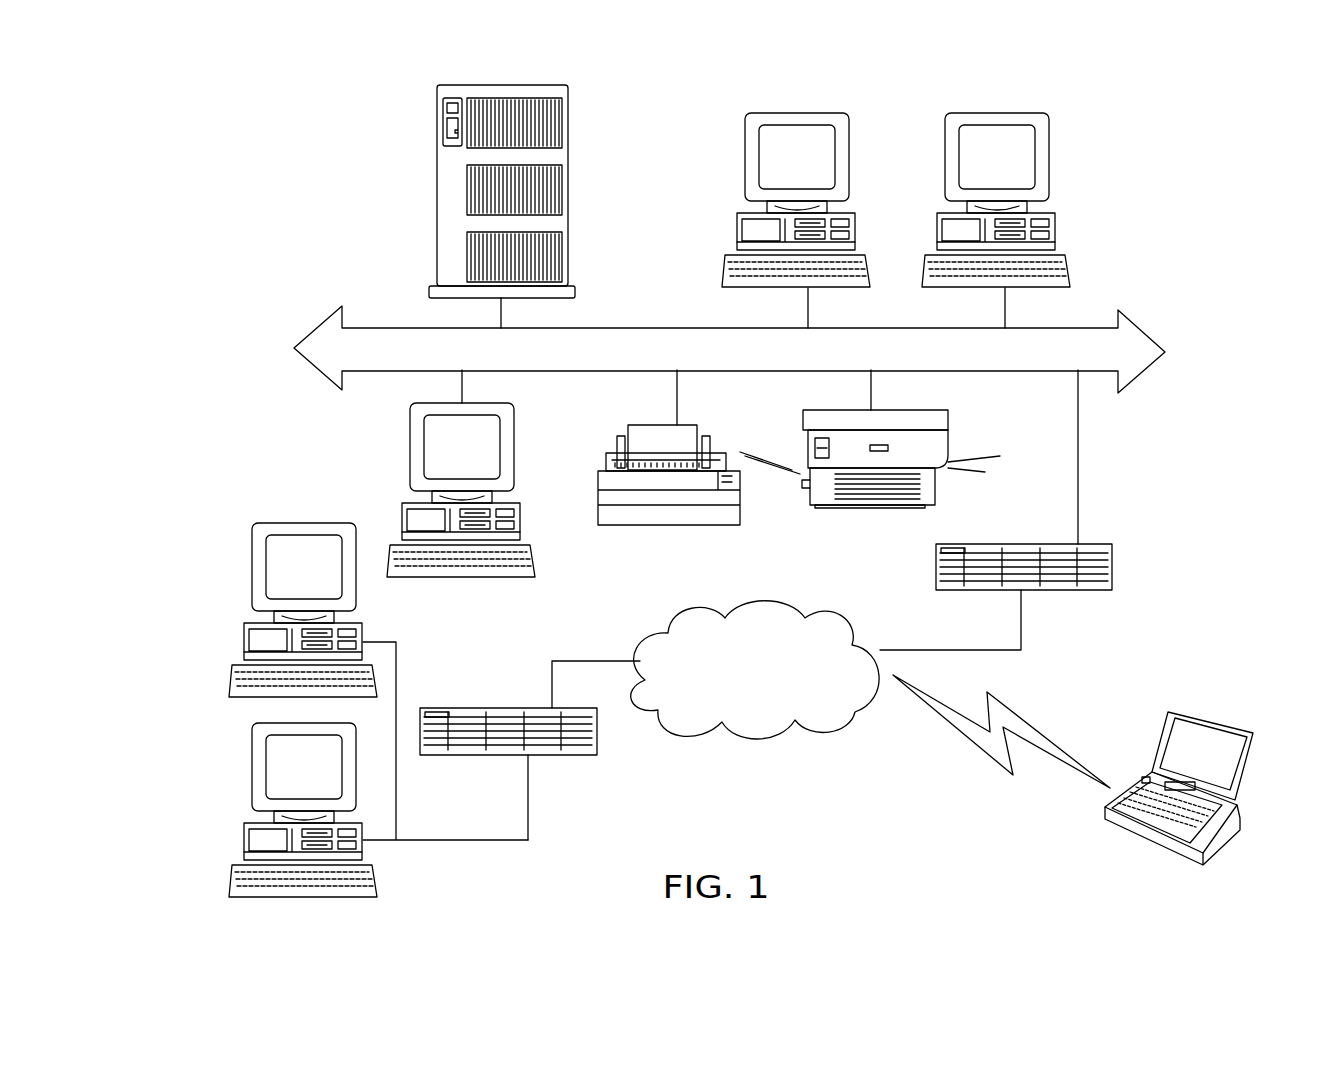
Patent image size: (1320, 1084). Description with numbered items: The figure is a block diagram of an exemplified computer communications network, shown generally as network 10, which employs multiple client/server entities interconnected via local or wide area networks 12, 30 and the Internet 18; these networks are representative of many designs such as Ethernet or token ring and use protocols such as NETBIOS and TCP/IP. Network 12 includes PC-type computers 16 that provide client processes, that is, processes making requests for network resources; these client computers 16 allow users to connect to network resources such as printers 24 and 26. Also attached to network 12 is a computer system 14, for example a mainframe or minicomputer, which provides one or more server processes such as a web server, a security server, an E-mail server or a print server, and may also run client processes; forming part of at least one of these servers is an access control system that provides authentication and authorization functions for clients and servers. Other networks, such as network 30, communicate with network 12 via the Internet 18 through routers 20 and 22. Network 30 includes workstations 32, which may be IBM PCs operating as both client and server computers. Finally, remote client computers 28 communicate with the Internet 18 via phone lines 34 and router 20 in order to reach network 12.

The network 10 is at (219, 298).
The network 12 is at (320, 326).
The computer system 14 is at (437, 183).
The PC-type computers 16 is at (745, 155).
The Internet 18 is at (808, 724).
The router 20 is at (1112, 560).
The router 22 is at (560, 757).
The printer 24 is at (950, 418).
The printer 26 is at (641, 523).
The remote client computer 28 is at (1105, 815).
The network 30 is at (396, 800).
The workstations 32 is at (252, 560).
The phone lines 34 is at (985, 758).